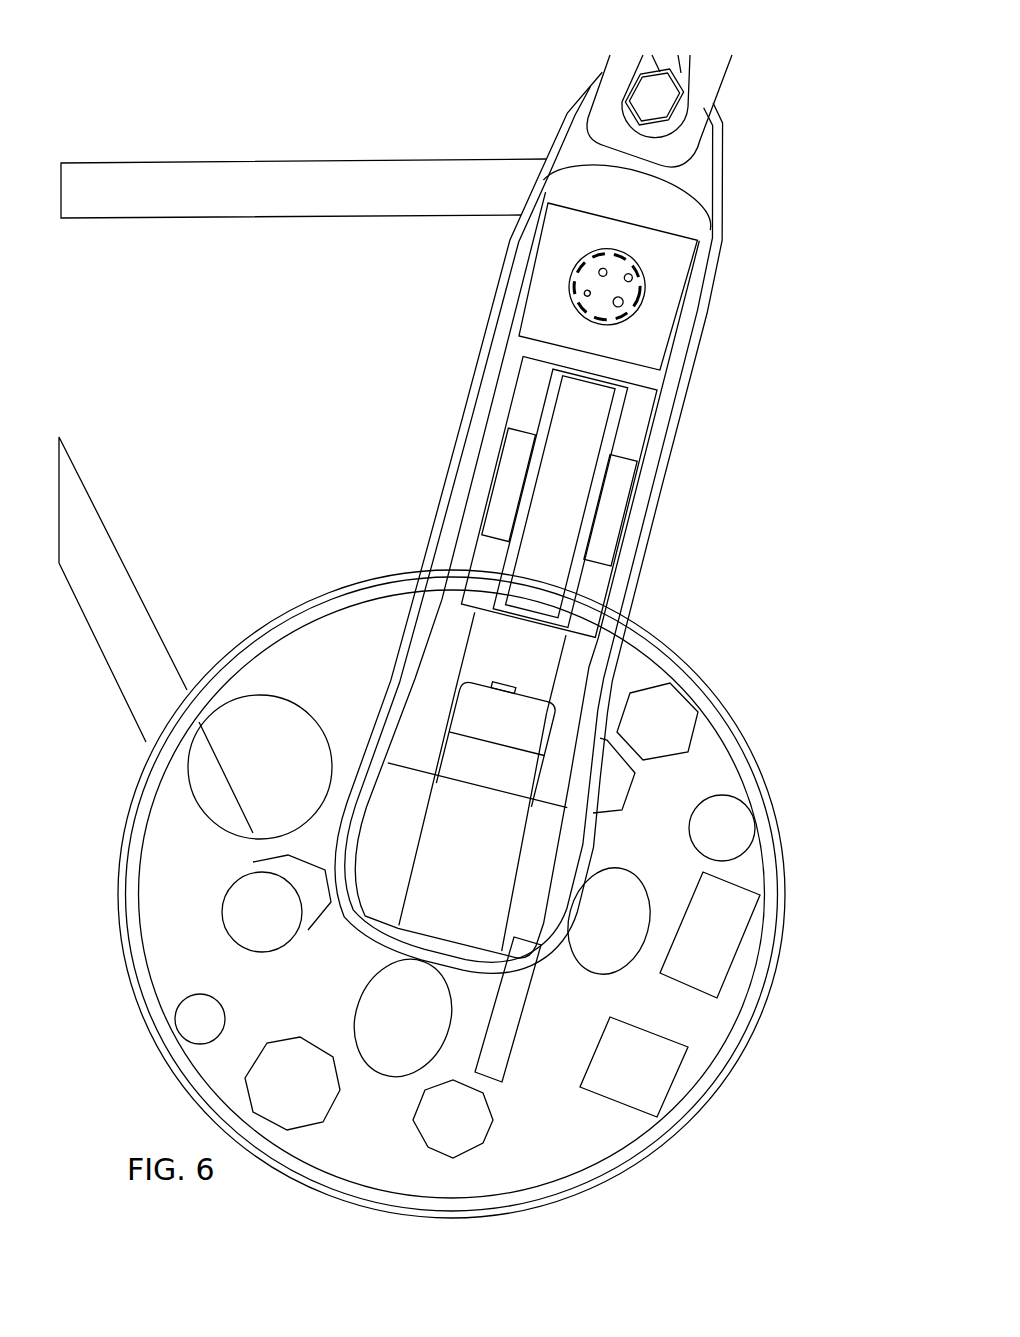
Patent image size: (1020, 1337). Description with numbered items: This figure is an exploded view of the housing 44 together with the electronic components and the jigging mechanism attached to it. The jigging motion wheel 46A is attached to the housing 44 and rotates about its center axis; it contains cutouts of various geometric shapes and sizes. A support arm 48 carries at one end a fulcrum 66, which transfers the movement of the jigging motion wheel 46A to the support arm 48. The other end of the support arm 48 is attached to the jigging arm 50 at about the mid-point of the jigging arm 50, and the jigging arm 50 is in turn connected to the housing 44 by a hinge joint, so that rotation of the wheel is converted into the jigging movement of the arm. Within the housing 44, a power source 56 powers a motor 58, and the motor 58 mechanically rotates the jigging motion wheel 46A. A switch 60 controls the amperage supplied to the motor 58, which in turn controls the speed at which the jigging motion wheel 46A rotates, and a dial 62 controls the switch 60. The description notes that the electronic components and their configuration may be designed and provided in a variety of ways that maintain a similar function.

The housing 44 is at (624, 562).
The jigging motion wheel 46A is at (157, 1038).
The support arm 48 is at (142, 650).
The jigging arm 50 is at (355, 218).
The power source 56 is at (583, 472).
The motor 58 is at (465, 932).
The switch 60 is at (505, 705).
The dial 62 is at (650, 276).
The fulcrum 66 is at (258, 923).